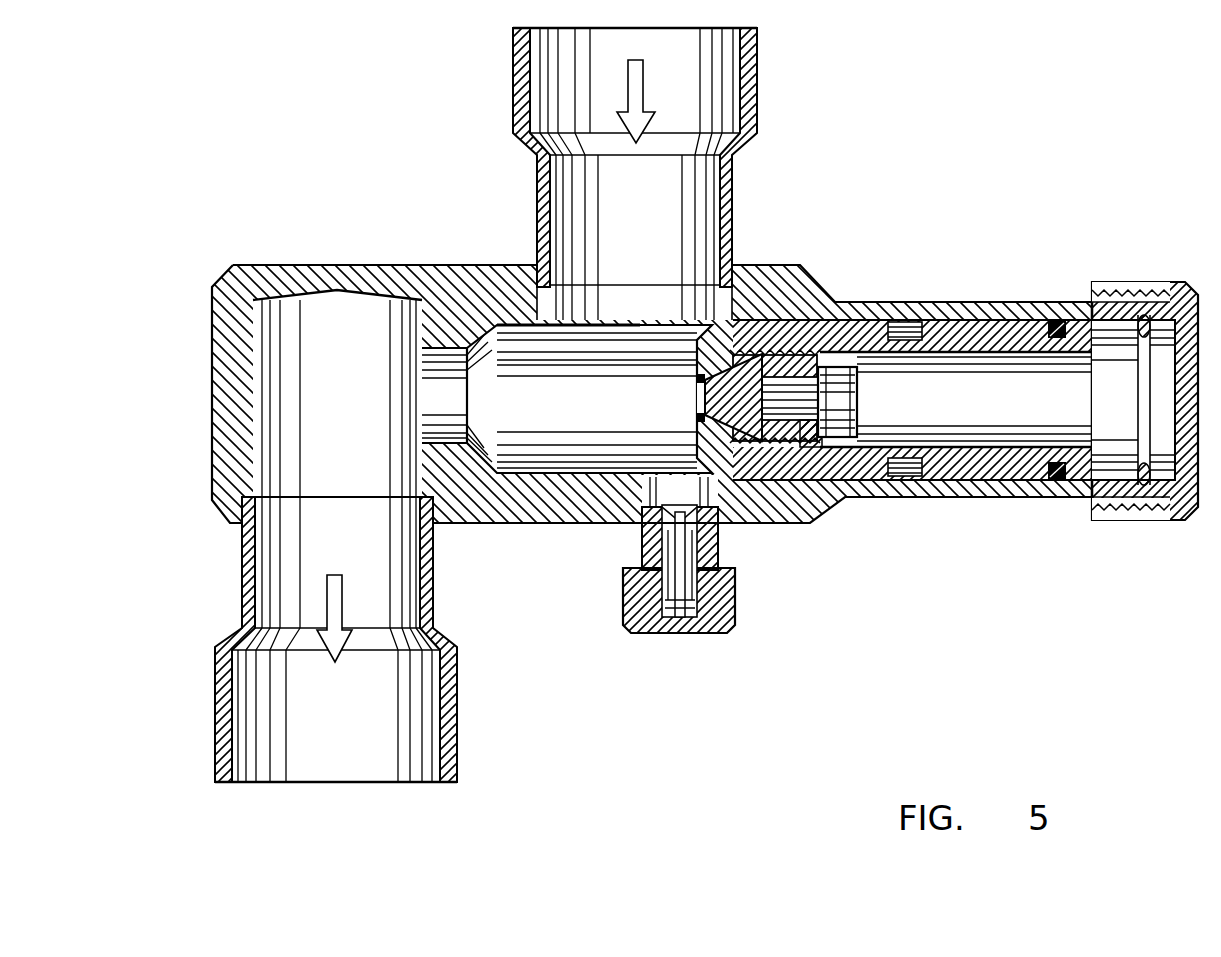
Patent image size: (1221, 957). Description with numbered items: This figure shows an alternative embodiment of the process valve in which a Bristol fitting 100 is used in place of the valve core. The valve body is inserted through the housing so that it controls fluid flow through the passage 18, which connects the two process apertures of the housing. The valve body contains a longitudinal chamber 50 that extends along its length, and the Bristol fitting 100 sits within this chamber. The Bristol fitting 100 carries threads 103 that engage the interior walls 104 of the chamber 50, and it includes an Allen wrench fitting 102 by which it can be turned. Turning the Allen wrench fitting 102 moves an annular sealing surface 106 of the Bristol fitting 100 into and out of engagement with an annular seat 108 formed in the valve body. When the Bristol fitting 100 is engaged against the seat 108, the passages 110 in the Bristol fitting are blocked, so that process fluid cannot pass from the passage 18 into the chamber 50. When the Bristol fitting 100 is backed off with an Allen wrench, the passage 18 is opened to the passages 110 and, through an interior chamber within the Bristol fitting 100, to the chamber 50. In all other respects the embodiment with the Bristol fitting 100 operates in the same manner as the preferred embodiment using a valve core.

The passage 18 is at (578, 405).
The longitudinal chamber 50 is at (1004, 414).
The Bristol fitting 100 is at (793, 370).
The Allen wrench fitting 102 is at (867, 352).
The threads 103 is at (822, 445).
The interior walls 104 is at (947, 370).
The annular sealing surface 106 is at (700, 410).
The annular seat 108 is at (618, 322).
The passages 110 is at (748, 348).